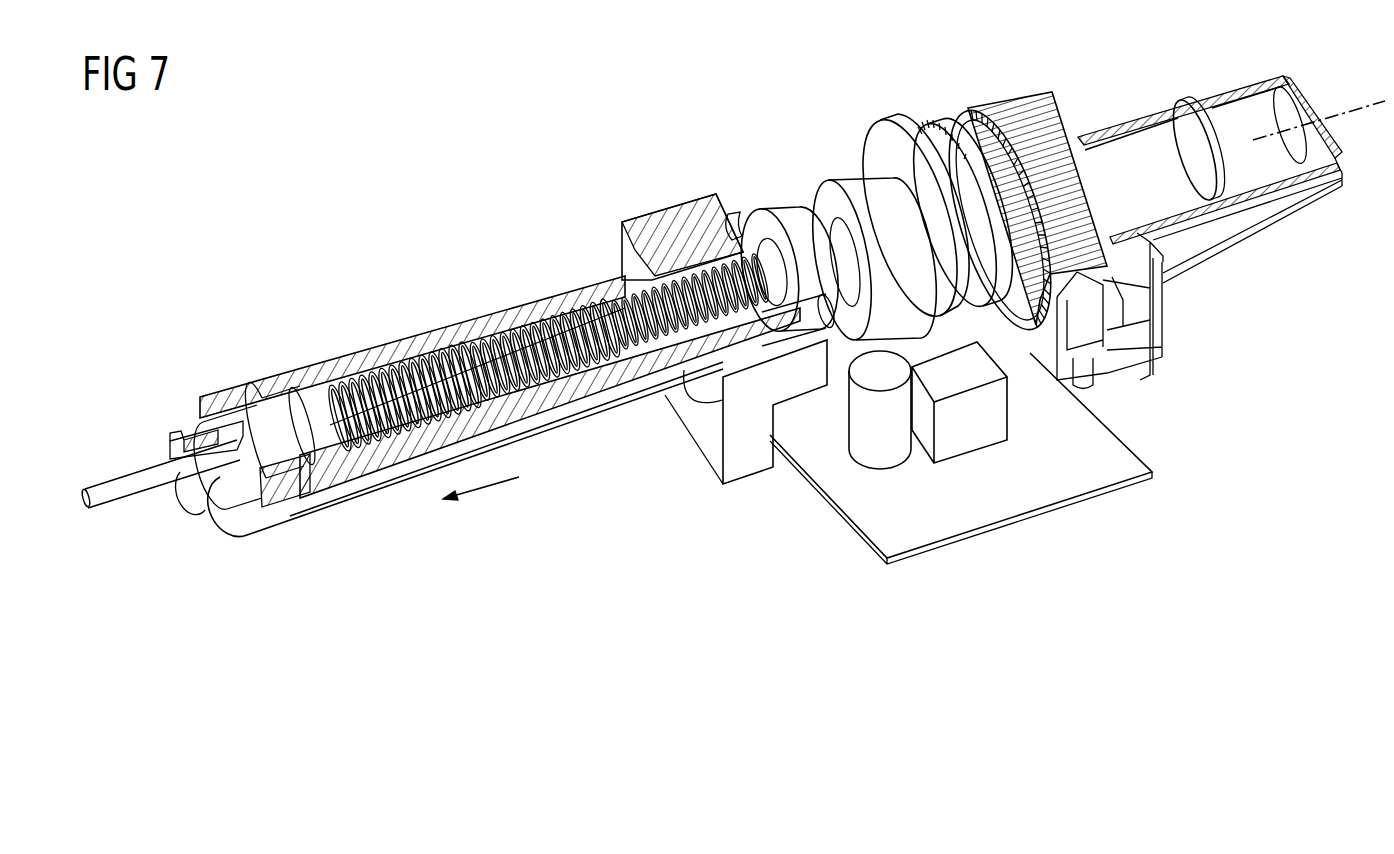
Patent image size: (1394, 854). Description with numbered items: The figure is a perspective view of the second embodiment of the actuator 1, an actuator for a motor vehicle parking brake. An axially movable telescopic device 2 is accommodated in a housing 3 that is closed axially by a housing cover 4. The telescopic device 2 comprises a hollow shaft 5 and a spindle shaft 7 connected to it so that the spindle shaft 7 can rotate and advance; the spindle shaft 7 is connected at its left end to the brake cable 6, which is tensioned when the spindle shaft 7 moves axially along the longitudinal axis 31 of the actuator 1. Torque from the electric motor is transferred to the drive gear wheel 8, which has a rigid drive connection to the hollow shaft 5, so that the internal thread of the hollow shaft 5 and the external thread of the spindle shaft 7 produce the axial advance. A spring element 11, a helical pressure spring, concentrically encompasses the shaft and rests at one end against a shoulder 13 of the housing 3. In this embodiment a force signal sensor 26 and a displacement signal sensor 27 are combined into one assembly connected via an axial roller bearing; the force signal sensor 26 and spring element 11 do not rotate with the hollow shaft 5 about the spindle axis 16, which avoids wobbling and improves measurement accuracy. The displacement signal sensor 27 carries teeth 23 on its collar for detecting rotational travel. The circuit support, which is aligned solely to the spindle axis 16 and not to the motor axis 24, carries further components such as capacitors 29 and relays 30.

The actuator 1 is at (699, 128).
The telescopic device 2 is at (767, 346).
The housing 3 is at (678, 220).
The housing cover 4 is at (1323, 137).
The hollow shaft 5 is at (801, 325).
The brake cable 6 is at (127, 495).
The spindle shaft 7 is at (488, 347).
The drive gear wheel 8 is at (1093, 175).
The spring element 11 is at (808, 205).
The shoulder 13 is at (728, 214).
The spindle axis 16 is at (1337, 112).
The teeth 23 is at (972, 115).
The motor axis 24 is at (1105, 445).
The force signal sensor 26 is at (900, 124).
The displacement signal sensor 27 is at (935, 112).
The capacitors 29 is at (883, 460).
The relays 30 is at (972, 438).
The longitudinal axis 31 is at (492, 486).